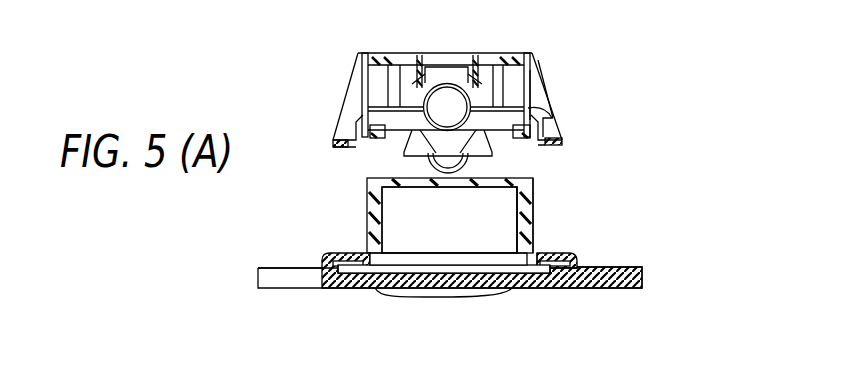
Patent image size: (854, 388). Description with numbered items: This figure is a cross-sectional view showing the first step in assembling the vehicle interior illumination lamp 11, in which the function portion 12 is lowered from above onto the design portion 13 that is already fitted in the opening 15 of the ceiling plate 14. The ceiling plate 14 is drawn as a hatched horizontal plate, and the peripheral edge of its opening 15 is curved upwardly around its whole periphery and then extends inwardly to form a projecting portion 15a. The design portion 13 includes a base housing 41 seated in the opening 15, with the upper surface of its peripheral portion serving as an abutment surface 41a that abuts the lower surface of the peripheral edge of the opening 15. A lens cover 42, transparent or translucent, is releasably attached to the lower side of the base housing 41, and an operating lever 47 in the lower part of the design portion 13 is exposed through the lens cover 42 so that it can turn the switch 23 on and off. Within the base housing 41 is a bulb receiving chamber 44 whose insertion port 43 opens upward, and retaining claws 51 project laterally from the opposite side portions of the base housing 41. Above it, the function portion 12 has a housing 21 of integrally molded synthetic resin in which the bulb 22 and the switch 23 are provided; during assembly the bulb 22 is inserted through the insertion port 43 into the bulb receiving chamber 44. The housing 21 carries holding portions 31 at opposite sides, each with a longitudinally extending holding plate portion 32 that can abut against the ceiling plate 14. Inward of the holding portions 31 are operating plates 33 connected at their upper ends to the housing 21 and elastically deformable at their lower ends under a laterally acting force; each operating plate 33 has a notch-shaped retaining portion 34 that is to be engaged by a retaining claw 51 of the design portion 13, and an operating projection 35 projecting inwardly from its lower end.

The vehicle interior illumination lamp 11 is at (489, 92).
The function portion 12 is at (460, 92).
The design portion 13 is at (508, 266).
The ceiling plate 14 is at (645, 271).
The opening 15 is at (538, 258).
The projecting portion 15a is at (556, 250).
The housing 21 is at (348, 62).
The bulb 22 is at (452, 97).
The switch 23 is at (410, 152).
The holding portion 31 is at (553, 100).
The holding plate portion 32 is at (556, 143).
The operating plate 33 is at (537, 86).
The retaining portion 34 is at (528, 107).
The operating projection 35 is at (375, 146).
The base housing 41 is at (443, 215).
The abutment surface 41a is at (553, 263).
The lens cover 42 is at (378, 290).
The insertion port 43 is at (421, 186).
The bulb receiving chamber 44 is at (437, 238).
The operating lever 47 is at (500, 288).
The retaining claw 51 is at (534, 214).